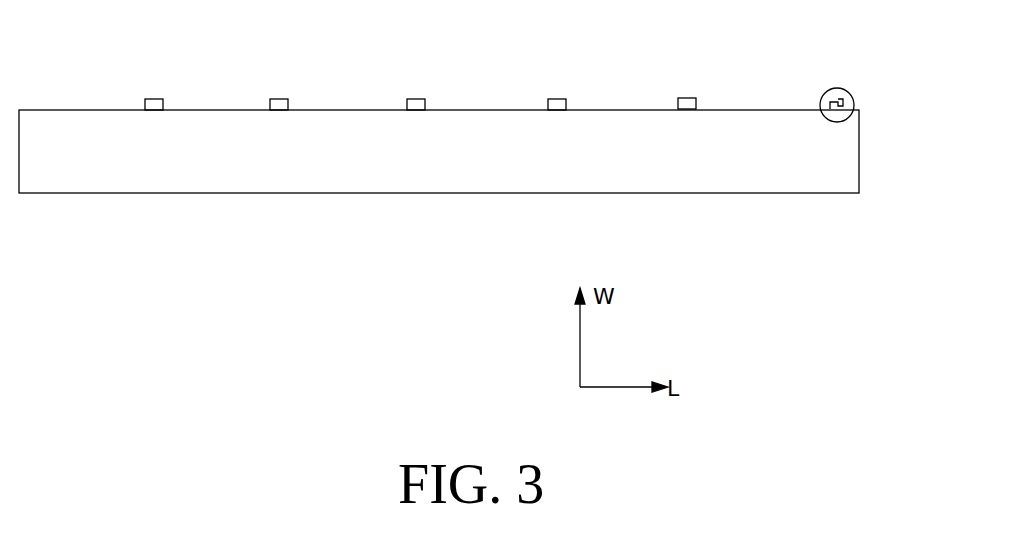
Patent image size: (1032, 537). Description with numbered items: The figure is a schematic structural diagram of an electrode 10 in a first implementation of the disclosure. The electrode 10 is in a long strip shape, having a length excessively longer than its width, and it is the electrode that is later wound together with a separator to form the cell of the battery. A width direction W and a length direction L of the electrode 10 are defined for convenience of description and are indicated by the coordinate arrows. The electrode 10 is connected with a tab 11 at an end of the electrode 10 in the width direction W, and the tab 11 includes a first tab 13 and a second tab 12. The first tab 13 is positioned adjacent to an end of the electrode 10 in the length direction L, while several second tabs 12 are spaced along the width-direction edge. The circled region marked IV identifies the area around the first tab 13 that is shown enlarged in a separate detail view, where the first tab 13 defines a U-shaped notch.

The electrode 10 is at (859, 146).
The tab 11 is at (848, 48).
The second tab 12 is at (160, 98).
The first tab 13 is at (840, 98).
The detail view IV is at (851, 100).